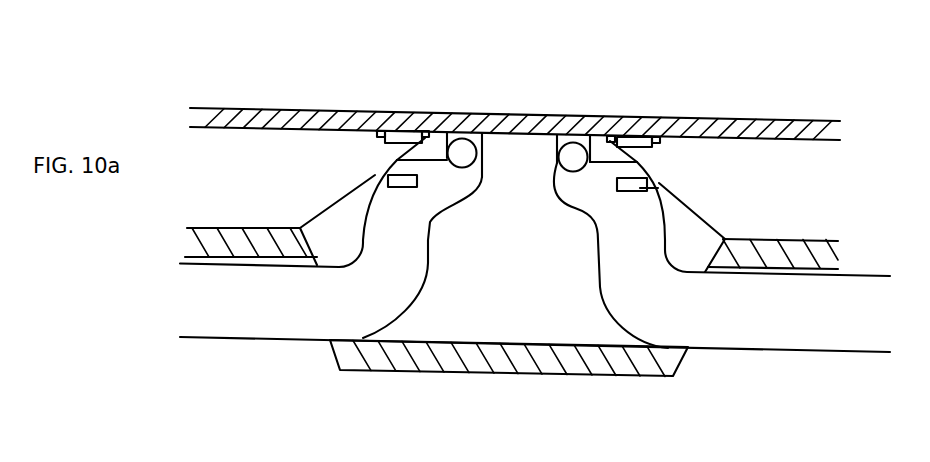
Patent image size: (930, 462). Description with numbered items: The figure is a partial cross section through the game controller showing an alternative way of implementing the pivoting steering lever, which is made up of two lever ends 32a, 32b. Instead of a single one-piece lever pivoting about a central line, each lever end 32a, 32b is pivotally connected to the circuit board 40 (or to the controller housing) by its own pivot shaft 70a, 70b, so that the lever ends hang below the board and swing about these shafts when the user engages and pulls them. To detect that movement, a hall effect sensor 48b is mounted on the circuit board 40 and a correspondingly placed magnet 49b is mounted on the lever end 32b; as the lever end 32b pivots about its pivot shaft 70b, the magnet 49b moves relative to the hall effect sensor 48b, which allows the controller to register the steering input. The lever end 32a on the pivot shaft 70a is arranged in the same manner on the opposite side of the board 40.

The circuit board 40 is at (718, 120).
The pivot shaft 70a is at (462, 153).
The pivot shaft 70b is at (573, 157).
The hall effect sensor 48b is at (653, 146).
The magnet 49b is at (659, 183).
The lever end 32a is at (180, 310).
The lever end 32b is at (745, 325).